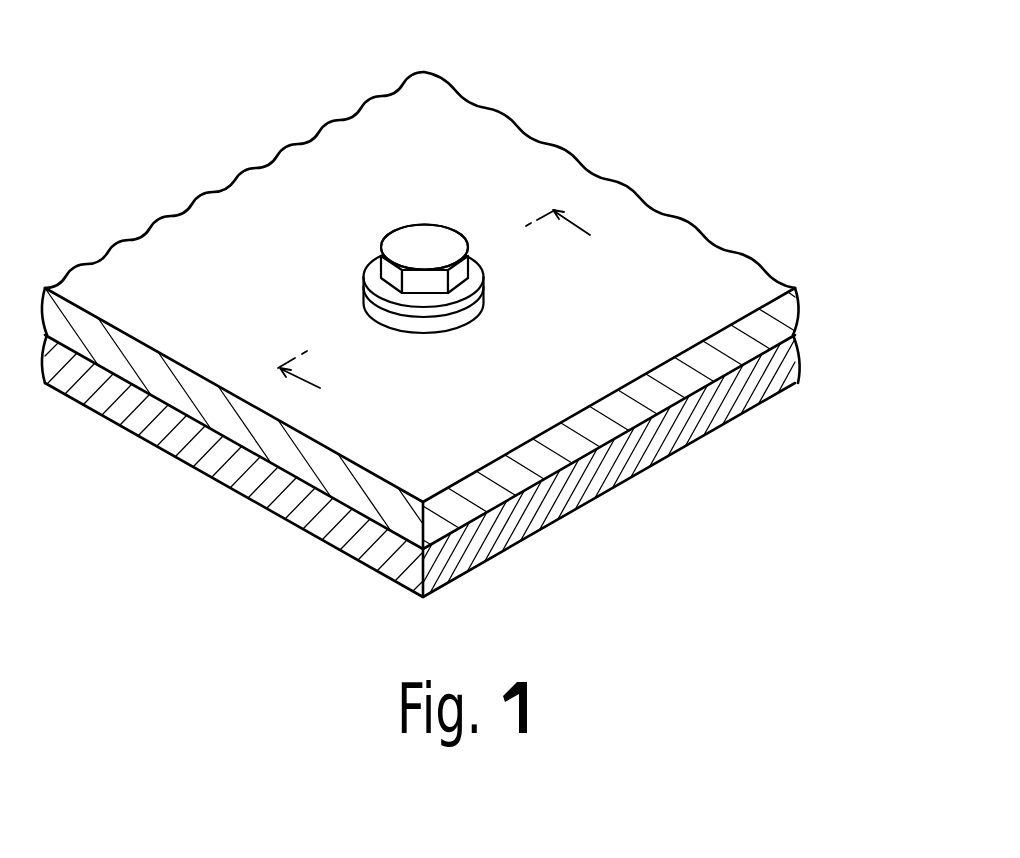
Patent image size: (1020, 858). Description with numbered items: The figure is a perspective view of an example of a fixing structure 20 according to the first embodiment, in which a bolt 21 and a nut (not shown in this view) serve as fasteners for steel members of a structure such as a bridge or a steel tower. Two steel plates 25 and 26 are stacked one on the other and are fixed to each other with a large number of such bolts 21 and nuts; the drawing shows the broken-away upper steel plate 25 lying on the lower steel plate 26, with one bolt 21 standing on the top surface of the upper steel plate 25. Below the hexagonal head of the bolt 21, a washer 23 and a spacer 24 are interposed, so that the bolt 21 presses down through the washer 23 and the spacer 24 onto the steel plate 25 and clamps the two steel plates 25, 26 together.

The fixing structure 20 is at (462, 327).
The bolt 21 is at (440, 245).
The washer 23 is at (484, 284).
The spacer 24 is at (484, 313).
The steel plate 25 is at (800, 312).
The steel plate 26 is at (800, 370).